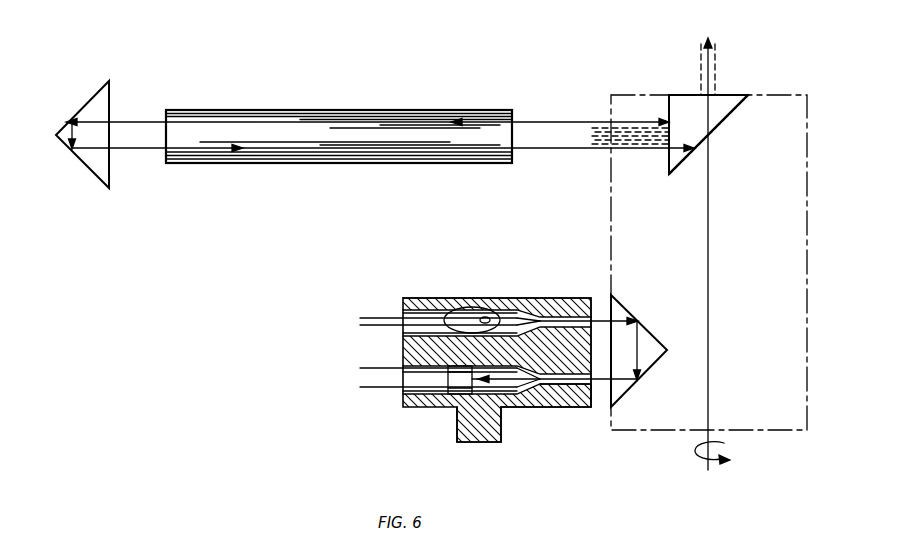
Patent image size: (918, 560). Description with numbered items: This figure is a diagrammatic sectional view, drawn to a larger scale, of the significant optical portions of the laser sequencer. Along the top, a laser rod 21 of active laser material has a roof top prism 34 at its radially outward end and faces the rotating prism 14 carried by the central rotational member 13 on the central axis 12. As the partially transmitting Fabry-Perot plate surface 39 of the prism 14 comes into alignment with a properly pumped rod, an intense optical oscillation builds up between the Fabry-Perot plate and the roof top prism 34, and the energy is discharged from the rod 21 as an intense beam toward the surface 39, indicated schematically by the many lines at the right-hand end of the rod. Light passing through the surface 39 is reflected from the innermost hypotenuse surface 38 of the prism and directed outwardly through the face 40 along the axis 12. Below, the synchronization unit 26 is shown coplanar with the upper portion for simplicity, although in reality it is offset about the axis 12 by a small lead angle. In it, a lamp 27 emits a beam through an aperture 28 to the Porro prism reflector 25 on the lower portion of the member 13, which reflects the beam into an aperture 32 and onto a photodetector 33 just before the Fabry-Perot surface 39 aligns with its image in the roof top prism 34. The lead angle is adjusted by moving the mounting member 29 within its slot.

The central axis 12 is at (704, 75).
The central rotational member 13 is at (797, 431).
The prism 14 is at (714, 120).
The laser rod 21 is at (337, 111).
The Porro prism reflector 25 is at (648, 357).
The synchronization unit 26 is at (545, 306).
The lamp 27 is at (470, 312).
The aperture 28 is at (582, 306).
The mounting member 29 is at (470, 440).
The aperture 32 is at (566, 385).
The photodetector 33 is at (452, 395).
The roof top prism 34 is at (95, 104).
The hypotenuse surface 38 is at (732, 114).
The Fabry-Perot plate surface 39 is at (666, 110).
The face 40 is at (733, 95).